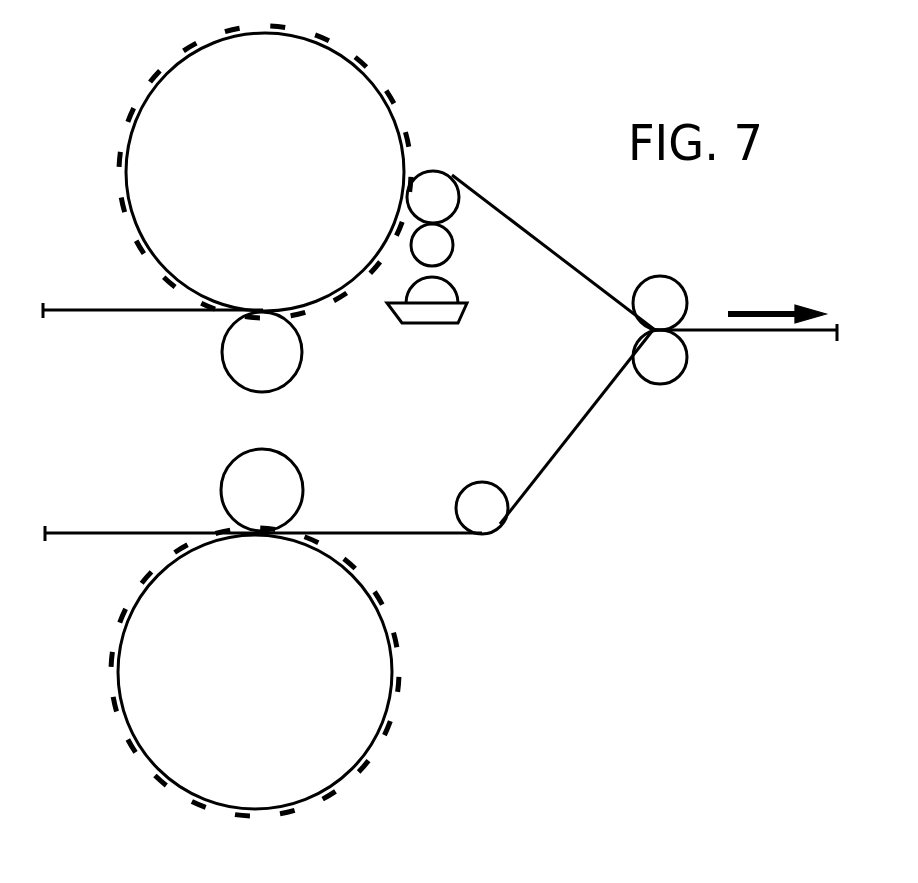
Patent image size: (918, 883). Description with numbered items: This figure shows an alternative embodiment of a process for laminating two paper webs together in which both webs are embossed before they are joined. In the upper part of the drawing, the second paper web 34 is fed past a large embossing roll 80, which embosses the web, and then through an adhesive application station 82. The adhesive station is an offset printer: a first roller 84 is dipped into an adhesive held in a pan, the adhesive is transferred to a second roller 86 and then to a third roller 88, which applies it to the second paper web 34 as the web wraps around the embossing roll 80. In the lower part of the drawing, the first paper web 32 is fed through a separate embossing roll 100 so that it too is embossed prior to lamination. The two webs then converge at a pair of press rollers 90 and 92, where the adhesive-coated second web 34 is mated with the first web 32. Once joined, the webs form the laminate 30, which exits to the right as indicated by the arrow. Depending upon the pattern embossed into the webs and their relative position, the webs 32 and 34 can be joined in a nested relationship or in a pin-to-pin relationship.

The laminate 30 is at (740, 332).
The first paper web 32 is at (122, 528).
The second paper web 34 is at (167, 311).
The embossing roll 80 is at (170, 122).
The adhesive application station 82 is at (413, 168).
The first roller 84 is at (417, 293).
The second roller 86 is at (446, 252).
The third roller 88 is at (448, 205).
The press roller 90 is at (670, 367).
The press roller 92 is at (677, 308).
The embossing roll 100 is at (363, 652).